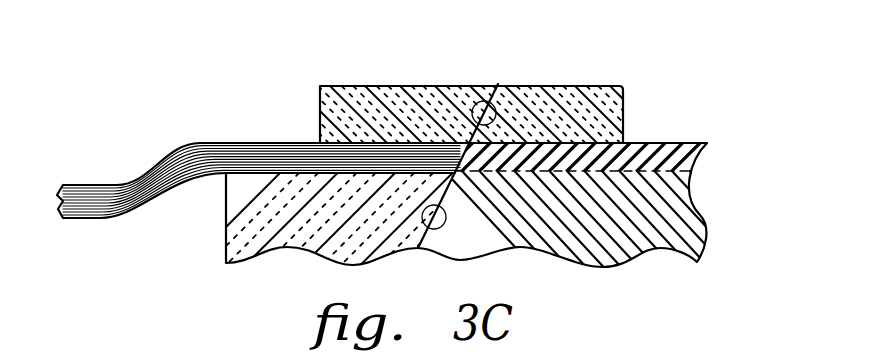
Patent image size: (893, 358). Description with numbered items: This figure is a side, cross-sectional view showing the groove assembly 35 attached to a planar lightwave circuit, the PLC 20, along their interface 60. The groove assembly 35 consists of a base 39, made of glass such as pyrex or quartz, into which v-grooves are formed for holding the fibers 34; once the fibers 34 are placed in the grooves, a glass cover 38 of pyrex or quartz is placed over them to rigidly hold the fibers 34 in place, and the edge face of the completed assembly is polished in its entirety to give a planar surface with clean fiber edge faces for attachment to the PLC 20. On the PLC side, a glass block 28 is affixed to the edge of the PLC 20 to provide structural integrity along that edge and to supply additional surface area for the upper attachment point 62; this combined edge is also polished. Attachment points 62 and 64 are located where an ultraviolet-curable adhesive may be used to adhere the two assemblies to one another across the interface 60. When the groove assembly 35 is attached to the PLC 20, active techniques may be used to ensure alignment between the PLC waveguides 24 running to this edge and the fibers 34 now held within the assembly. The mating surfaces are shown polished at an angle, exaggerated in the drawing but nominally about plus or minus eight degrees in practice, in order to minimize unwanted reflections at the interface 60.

The PLC 20 is at (685, 218).
The PLC waveguides 24 is at (655, 146).
The glass block 28 is at (604, 110).
The fibers 34 is at (119, 183).
The groove assembly 35 is at (328, 75).
The glass cover 38 is at (345, 105).
The base 39 is at (250, 226).
The interface 60 is at (503, 73).
The attachment point 62 is at (473, 101).
The attachment point 64 is at (431, 230).